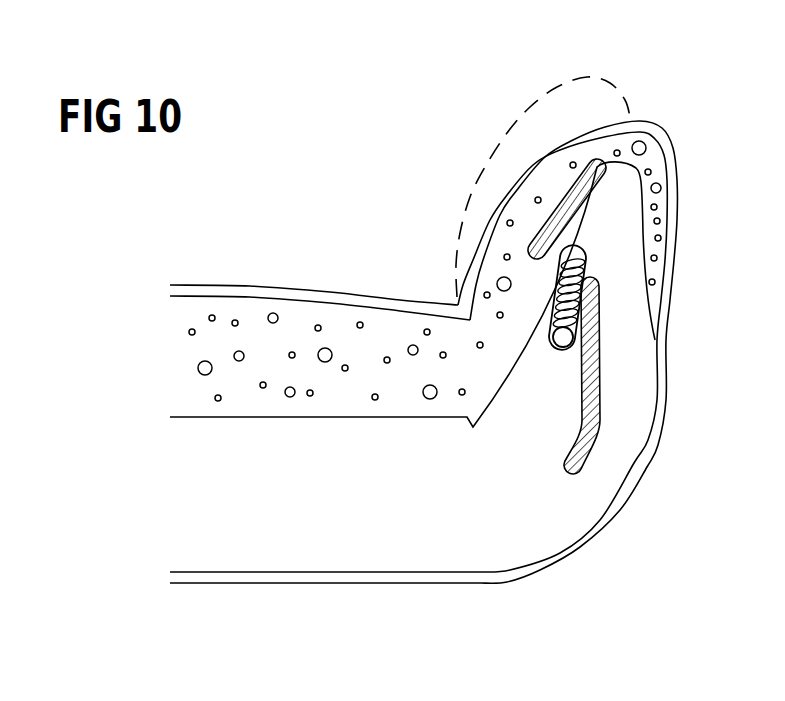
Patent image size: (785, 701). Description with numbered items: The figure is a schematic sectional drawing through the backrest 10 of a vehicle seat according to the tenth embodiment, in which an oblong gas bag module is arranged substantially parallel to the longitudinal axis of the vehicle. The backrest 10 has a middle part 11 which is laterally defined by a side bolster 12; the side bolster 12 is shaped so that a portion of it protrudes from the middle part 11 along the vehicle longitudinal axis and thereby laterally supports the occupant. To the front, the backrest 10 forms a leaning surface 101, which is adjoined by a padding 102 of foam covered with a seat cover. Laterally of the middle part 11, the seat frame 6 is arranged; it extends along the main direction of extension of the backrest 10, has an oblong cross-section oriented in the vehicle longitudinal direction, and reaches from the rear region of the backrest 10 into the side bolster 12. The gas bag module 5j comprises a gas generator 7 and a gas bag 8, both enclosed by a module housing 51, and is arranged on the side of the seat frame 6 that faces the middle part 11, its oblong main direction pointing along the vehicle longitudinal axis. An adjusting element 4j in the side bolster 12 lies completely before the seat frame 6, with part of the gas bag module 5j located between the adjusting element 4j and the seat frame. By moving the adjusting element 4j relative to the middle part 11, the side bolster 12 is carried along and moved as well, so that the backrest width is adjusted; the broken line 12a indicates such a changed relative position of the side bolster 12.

The backrest 10 is at (600, 550).
The side bolster 12 is at (513, 185).
The broken line 12a is at (543, 99).
The middle part 11 is at (225, 282).
The leaning surface 101 is at (283, 292).
The padding 102 is at (202, 350).
The adjusting element 4j is at (595, 163).
The gas bag module 5j is at (639, 259).
The gas bag 8 is at (583, 253).
The module housing 51 is at (587, 270).
The gas generator 7 is at (565, 336).
The seat frame 6 is at (590, 455).